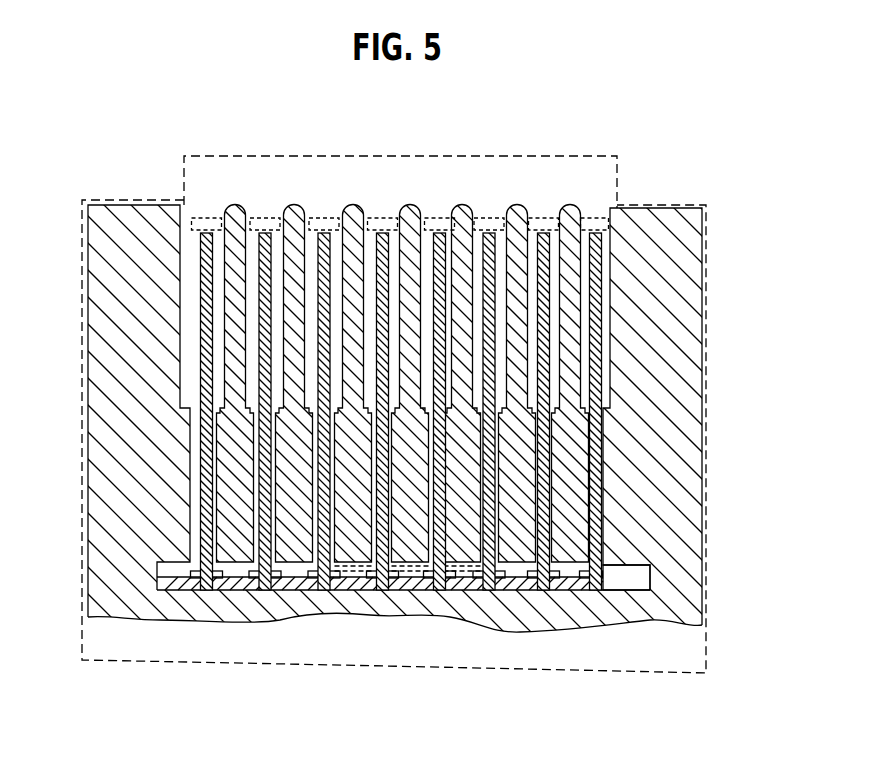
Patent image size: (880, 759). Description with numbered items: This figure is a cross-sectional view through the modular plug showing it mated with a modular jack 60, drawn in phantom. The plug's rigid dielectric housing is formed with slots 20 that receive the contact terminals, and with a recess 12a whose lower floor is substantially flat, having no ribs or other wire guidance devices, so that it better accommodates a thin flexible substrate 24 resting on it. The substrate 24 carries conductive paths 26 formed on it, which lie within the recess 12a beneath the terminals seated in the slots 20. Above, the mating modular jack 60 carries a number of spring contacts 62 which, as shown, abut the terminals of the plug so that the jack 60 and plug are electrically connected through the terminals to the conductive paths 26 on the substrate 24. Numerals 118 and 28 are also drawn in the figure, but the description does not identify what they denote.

The mating modular jack 60 is at (670, 160).
The pins 118 is at (266, 232).
The spring contacts 62 is at (377, 223).
The slots 20 is at (478, 232).
The conductive paths 26 is at (195, 583).
The thin flexible substrate 24 is at (240, 583).
The base 28 is at (467, 593).
The recess 12a is at (637, 585).